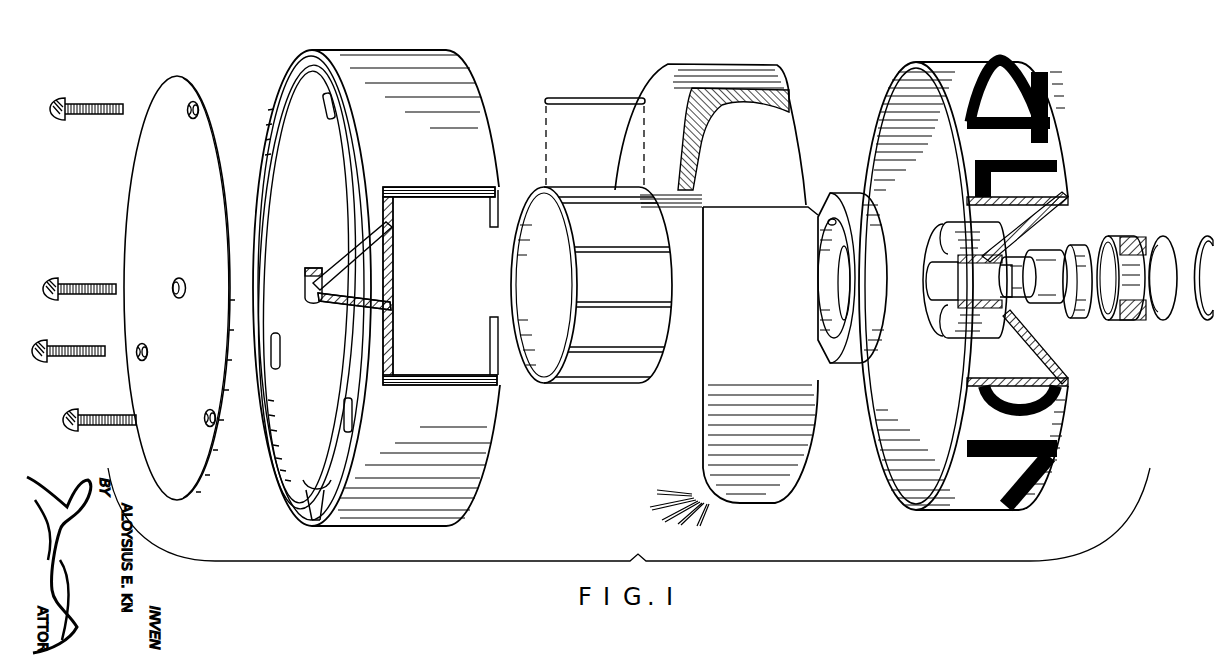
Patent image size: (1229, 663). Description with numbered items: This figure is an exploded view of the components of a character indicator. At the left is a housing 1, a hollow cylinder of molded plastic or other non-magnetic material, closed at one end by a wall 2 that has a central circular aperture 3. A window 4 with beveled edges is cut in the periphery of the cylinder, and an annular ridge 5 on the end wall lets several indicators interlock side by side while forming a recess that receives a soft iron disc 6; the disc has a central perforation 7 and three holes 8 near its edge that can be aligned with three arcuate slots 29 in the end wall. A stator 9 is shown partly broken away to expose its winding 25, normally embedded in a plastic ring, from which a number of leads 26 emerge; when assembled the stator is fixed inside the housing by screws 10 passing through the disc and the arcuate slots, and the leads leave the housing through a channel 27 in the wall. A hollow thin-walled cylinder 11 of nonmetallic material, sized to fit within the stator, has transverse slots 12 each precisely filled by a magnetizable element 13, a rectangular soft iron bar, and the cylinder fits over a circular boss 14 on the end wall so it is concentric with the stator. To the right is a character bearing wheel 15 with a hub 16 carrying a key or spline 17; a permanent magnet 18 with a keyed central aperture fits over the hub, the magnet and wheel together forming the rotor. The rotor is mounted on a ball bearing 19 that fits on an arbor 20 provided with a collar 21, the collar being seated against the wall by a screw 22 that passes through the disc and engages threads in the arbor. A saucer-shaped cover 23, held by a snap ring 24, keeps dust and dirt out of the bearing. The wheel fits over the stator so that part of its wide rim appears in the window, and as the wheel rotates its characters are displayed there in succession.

The housing 1 is at (458, 74).
The wall 2 is at (281, 125).
The central circular aperture 3 is at (307, 276).
The window 4 is at (431, 190).
The annular ridge 5 is at (263, 455).
The soft iron disc 6 is at (176, 80).
The central perforation 7 is at (173, 285).
The holes 8 is at (191, 121).
The stator 9 is at (700, 62).
The screws 10 is at (93, 99).
The hollow thin-walled cylinder 11 is at (592, 372).
The transverse slots 12 is at (600, 187).
The magnetizable element 13 is at (581, 98).
The circular boss 14 is at (353, 256).
The character bearing wheel 15 is at (1055, 153).
The hub 16 is at (937, 327).
The key or spline 17 is at (957, 223).
The permanent magnet 18 is at (825, 355).
The ball bearing 19 is at (1124, 237).
The arbor 20 is at (1077, 251).
The collar 21 is at (1030, 306).
The screw 22 is at (108, 268).
The saucer-shaped cover 23 is at (1161, 319).
The snap ring 24 is at (1197, 322).
The winding 25 is at (792, 138).
The leads 26 is at (642, 496).
The channel 27 is at (313, 522).
The arcuate slots 29 is at (327, 108).